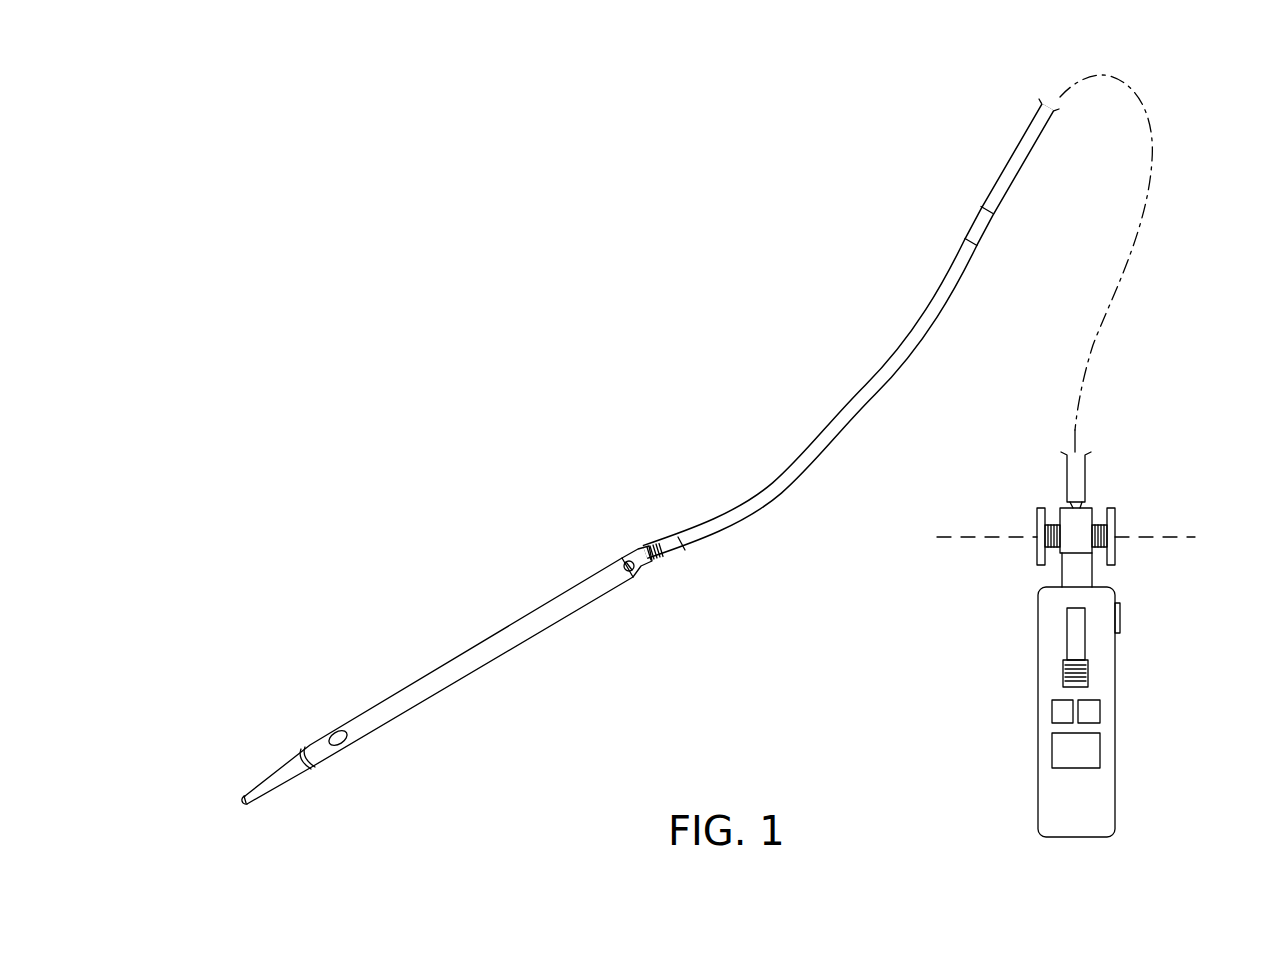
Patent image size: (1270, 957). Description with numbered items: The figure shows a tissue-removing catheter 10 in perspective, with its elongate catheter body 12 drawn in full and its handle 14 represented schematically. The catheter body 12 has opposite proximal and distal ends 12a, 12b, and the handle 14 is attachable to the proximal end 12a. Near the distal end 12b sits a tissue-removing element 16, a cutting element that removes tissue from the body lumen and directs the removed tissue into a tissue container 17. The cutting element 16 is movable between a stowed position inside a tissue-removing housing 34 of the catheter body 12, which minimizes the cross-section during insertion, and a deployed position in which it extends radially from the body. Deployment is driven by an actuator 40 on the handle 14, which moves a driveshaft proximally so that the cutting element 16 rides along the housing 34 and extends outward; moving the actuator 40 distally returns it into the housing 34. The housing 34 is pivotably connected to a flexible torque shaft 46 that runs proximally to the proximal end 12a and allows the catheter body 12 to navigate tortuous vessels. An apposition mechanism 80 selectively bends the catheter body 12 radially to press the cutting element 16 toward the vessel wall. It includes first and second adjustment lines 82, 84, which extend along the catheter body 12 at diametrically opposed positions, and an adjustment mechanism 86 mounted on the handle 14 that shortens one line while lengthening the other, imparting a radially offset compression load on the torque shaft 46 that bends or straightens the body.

The tissue-removing catheter 10 is at (588, 282).
The elongate catheter body 12 is at (791, 428).
The proximal end 12a is at (1070, 508).
The distal end 12b is at (242, 798).
The handle 14 is at (1165, 654).
The tissue-removing element 16 is at (623, 552).
The tissue container 17 is at (445, 678).
The tissue-removing housing 34 is at (640, 574).
The actuator 40 is at (1063, 673).
The flexible torque shaft 46 is at (780, 498).
The apposition mechanism 80 is at (1112, 482).
The first adjustment line 82 is at (1100, 538).
The second adjustment line 84 is at (1057, 553).
The adjustment mechanism 86 is at (1050, 545).